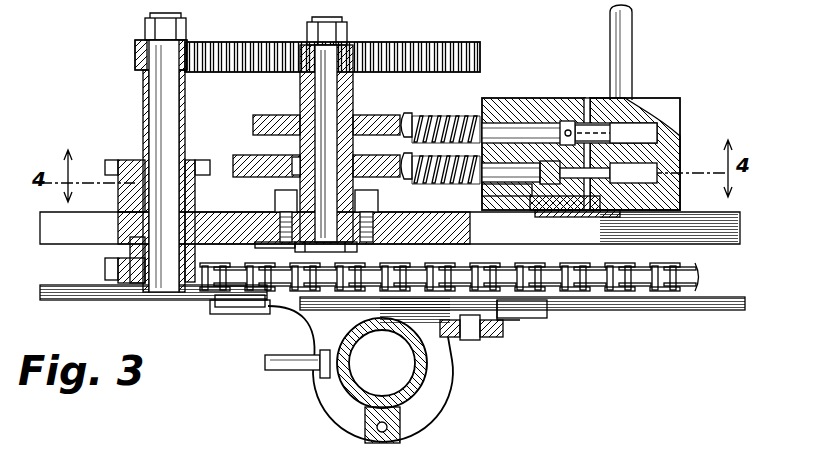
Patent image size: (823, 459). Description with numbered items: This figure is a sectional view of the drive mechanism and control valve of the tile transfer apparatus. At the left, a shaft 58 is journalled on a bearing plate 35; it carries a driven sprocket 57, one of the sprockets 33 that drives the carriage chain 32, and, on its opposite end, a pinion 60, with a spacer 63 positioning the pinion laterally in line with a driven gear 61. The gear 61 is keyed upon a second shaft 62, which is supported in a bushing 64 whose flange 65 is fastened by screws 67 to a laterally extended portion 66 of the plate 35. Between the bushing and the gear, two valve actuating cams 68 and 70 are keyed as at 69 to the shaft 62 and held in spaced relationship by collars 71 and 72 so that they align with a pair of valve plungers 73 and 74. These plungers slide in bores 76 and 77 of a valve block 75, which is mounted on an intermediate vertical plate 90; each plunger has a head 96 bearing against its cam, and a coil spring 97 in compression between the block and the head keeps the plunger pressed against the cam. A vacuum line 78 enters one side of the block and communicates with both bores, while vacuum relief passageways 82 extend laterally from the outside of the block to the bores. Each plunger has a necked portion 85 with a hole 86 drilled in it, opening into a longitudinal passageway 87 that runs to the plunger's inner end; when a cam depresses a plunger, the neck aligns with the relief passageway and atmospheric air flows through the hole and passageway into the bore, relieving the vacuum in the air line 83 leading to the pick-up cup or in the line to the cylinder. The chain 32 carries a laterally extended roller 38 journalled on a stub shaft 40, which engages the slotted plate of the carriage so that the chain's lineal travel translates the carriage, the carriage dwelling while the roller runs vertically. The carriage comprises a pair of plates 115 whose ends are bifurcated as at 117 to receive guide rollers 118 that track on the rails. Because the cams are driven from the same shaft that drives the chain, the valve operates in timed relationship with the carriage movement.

The sprocket chain 32 is at (697, 276).
The sprocket 33 is at (105, 268).
The bearing plate 35 is at (242, 212).
The roller 38 is at (468, 340).
The stub shaft 40 is at (490, 337).
The driven sprocket 57 is at (130, 160).
The shaft 58 is at (162, 113).
The pinion 60 is at (137, 58).
The spacer 63 is at (145, 86).
The driven gear 61 is at (448, 50).
The shaft 62 is at (350, 50).
The bushing 64 is at (372, 189).
The flange 65 is at (275, 201).
The laterally extended portion 66 is at (358, 246).
The screws 67 is at (282, 246).
The valve actuating cam 68 is at (253, 124).
The key 69 is at (291, 163).
The valve actuating cam 70 is at (240, 156).
The collar 71 is at (300, 93).
The collar 72 is at (354, 149).
The valve plunger 73 is at (490, 120).
The valve plunger 74 is at (483, 195).
The valve block 75 is at (640, 100).
The bore 76 is at (657, 133).
The bore 77 is at (657, 168).
The vacuum line 78 is at (632, 42).
The vacuum relief passageway 82 is at (588, 104).
The air line 83 is at (286, 370).
The necked portion 85 is at (562, 122).
The hole 86 is at (568, 128).
The longitudinal passageway 87 is at (613, 174).
The intermediate vertical plate 90 is at (626, 216).
The head 96 is at (405, 114).
The coil spring 97 is at (437, 116).
The carriage plate 115 is at (228, 314).
The bifurcated end 117 is at (272, 314).
The guide roller 118 is at (215, 306).